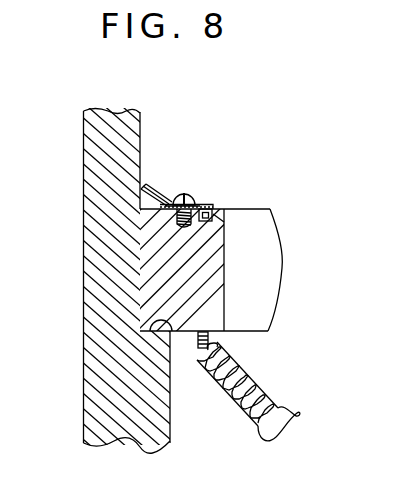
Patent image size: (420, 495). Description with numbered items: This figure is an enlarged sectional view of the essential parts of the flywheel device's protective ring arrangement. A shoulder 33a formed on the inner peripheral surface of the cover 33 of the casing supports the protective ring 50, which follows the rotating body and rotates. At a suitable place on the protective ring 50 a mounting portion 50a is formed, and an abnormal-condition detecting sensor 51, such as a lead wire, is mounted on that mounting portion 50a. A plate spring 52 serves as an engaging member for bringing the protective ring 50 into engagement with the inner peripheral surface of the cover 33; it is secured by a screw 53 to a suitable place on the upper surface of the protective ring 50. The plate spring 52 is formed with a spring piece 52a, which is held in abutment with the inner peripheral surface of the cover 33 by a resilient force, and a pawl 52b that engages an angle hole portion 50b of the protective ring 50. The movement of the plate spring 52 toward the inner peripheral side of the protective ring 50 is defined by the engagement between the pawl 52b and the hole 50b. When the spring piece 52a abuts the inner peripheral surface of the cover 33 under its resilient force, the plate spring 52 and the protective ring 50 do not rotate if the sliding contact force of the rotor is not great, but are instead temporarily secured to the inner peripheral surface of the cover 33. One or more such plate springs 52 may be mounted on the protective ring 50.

The cover 33 is at (91, 155).
The shoulder 33a is at (172, 336).
The protective ring 50 is at (216, 306).
The mounting portion 50a is at (210, 336).
The angle hole portion 50b is at (224, 222).
The abnormal-condition detecting sensor 51 is at (297, 413).
The plate spring 52 is at (156, 183).
The spring piece 52a is at (163, 204).
The pawl 52b is at (212, 213).
The screw 53 is at (190, 193).